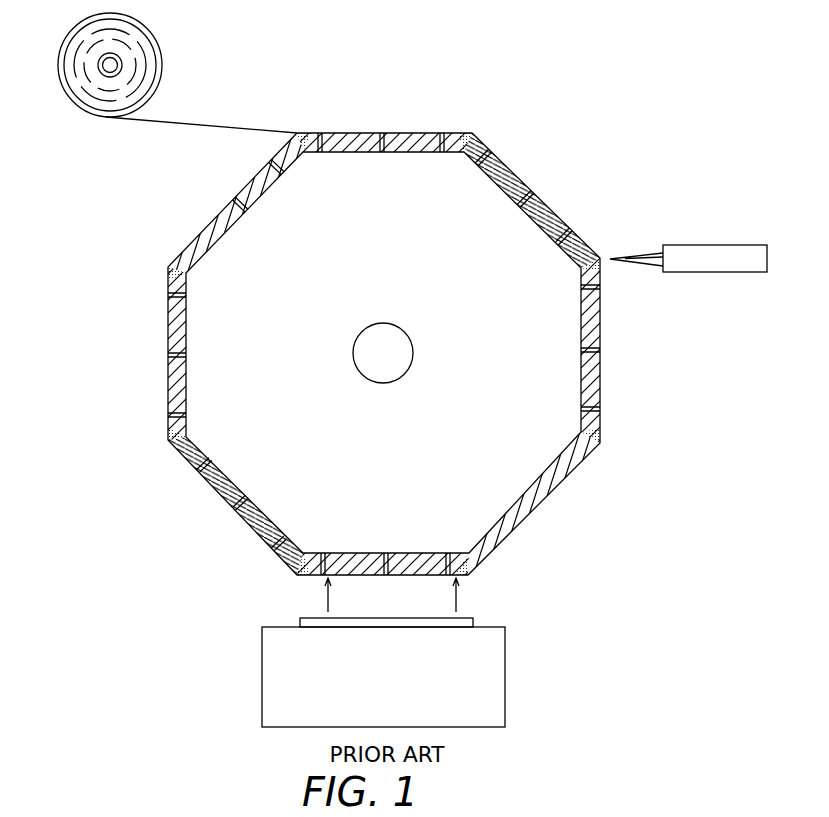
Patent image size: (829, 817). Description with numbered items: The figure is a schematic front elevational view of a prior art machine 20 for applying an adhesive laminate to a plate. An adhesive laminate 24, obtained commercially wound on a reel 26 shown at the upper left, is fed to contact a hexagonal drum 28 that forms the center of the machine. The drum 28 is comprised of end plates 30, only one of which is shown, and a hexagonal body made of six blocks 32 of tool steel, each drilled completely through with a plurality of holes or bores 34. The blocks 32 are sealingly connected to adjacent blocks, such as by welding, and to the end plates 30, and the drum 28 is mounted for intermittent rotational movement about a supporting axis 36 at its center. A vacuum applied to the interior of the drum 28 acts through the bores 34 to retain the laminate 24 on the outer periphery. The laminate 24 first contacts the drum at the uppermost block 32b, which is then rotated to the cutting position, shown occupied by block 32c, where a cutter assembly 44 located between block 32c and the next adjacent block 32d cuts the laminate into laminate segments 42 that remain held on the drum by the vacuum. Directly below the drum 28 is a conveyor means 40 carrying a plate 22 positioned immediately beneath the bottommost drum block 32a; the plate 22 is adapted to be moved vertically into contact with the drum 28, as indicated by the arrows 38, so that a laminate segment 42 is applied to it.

The prior art machine 20 is at (84, 335).
The plate 22 is at (481, 628).
The adhesive laminate 24 is at (140, 120).
The reel 26 is at (157, 43).
The hexagonal drum 28 is at (206, 482).
The end plate 30 is at (323, 274).
The block 32 is at (207, 226).
The bottommost drum block 32a is at (414, 553).
The uppermost block 32b is at (400, 153).
The block in cutting position 32c is at (531, 218).
The next adjacent block 32d is at (582, 315).
The holes or bores 34 is at (231, 199).
The supporting axis 36 is at (412, 361).
The heat flow arrows 38 is at (326, 592).
The conveyor means 40 is at (512, 681).
The laminate segments 42 is at (602, 380).
The cutter assembly 44 is at (697, 282).